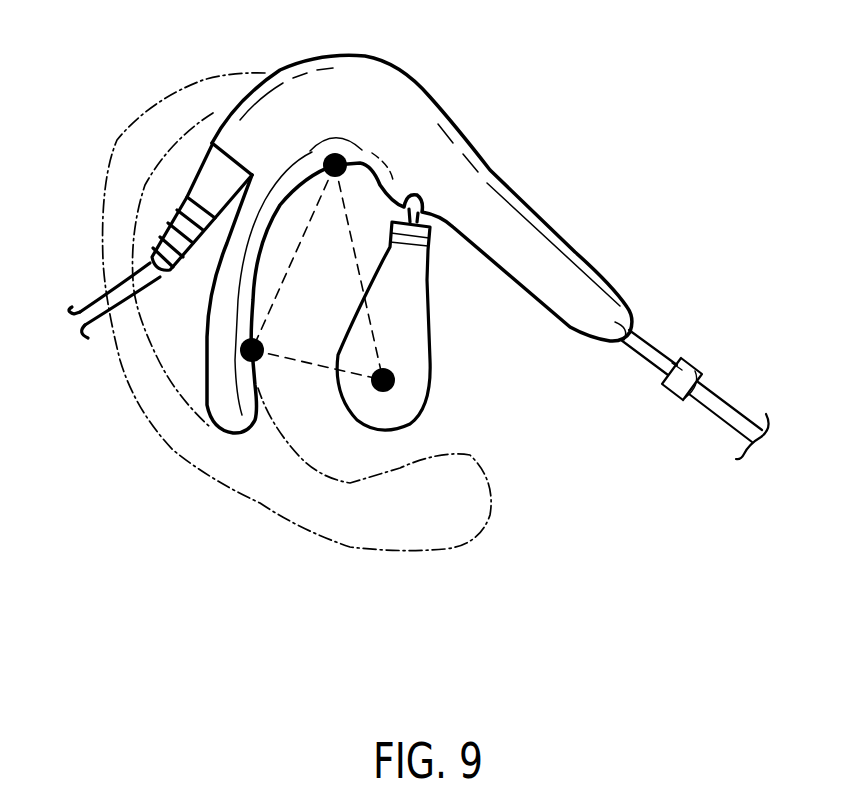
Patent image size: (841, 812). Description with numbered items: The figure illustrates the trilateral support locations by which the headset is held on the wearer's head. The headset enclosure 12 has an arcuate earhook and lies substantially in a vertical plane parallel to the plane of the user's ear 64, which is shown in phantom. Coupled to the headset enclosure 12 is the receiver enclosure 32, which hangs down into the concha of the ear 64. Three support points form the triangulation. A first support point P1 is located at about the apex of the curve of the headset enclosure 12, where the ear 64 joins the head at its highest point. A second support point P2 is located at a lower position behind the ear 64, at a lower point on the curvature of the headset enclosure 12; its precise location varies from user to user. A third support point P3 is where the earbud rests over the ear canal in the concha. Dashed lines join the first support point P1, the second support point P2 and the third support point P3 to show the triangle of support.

The headset enclosure 12 is at (476, 157).
The receiver enclosure 32 is at (423, 312).
The user's ear 64 is at (120, 337).
The first support point P1 is at (337, 152).
The second support point P2 is at (250, 352).
The third support point P3 is at (383, 380).